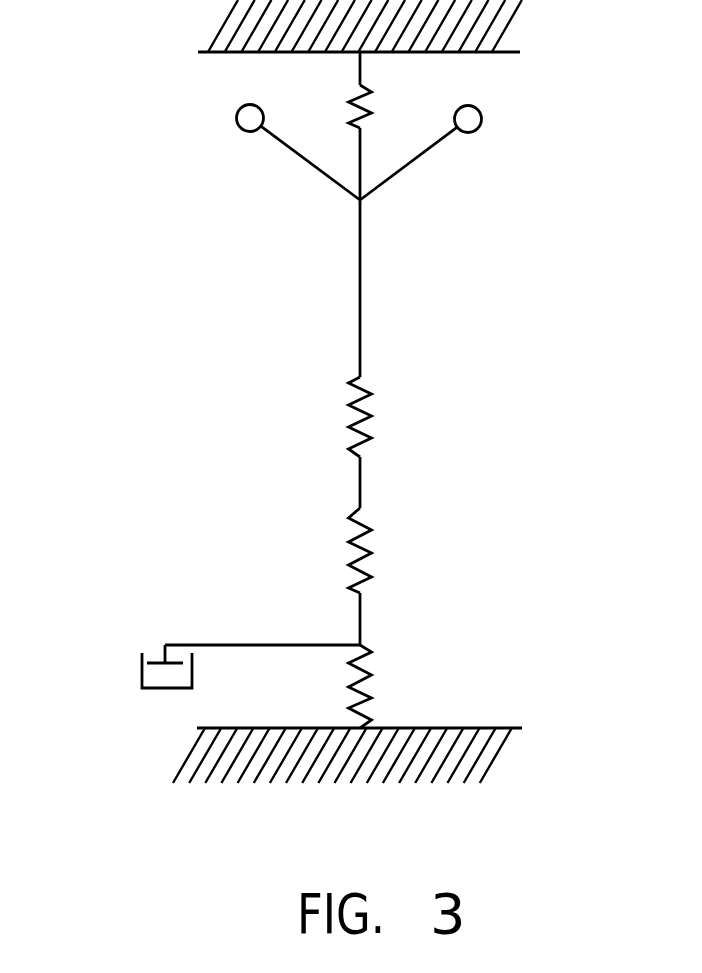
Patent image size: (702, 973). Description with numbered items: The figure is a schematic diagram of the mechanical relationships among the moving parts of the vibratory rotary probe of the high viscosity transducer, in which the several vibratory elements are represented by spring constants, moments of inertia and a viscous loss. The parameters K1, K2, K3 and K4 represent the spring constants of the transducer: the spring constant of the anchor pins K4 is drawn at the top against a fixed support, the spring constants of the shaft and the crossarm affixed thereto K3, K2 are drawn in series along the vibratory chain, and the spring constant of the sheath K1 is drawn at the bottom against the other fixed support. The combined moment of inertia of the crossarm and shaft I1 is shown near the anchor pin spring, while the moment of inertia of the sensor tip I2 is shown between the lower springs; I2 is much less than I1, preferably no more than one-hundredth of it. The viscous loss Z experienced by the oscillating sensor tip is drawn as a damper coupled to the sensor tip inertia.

The spring constant of the anchor pins K4 is at (377, 107).
The combined moment of inertia of the crossarm and shaft I1 is at (480, 132).
The spring constant of the shaft and crossarm K3 is at (370, 427).
The spring constant of the shaft and crossarm K2 is at (370, 563).
The moment of inertia of the sensor tip I2 is at (365, 653).
The viscous loss Z is at (146, 640).
The spring constant of the sheath K1 is at (377, 700).